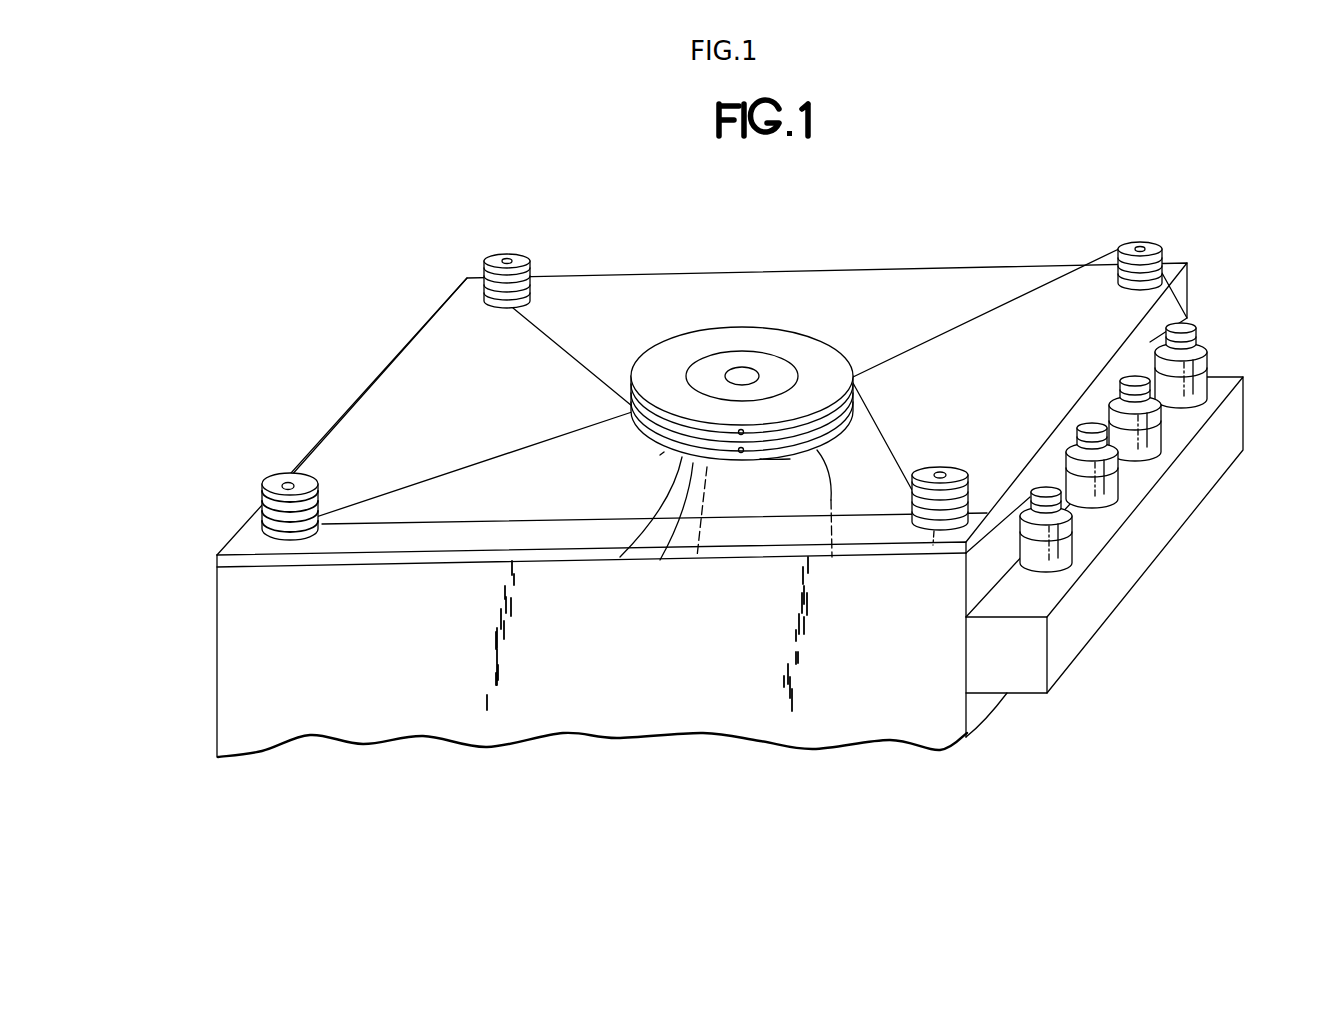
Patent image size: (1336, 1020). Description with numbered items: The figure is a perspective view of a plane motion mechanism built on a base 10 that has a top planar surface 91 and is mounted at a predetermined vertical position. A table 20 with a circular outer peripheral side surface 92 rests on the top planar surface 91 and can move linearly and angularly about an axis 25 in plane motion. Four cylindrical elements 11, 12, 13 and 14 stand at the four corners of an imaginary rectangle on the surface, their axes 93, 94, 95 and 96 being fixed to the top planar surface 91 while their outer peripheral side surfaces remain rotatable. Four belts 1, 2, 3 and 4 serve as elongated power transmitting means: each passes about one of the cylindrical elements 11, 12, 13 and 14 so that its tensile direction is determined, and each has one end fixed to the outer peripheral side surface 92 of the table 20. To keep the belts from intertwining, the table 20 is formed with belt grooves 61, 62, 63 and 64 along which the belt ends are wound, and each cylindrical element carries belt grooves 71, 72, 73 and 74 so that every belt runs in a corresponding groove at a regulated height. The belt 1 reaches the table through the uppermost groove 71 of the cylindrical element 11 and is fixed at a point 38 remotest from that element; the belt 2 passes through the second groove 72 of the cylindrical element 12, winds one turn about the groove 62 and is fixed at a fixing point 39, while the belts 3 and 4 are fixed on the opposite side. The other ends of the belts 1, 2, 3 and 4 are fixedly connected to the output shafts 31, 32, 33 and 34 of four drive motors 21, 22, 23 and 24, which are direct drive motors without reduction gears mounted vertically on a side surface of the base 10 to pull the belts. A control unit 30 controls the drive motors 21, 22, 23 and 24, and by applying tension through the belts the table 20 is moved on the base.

The belt 1 is at (990, 314).
The belt 2 is at (556, 344).
The belt 3 is at (476, 464).
The belt 4 is at (890, 452).
The base 10 is at (262, 609).
The cylindrical element 11 is at (1150, 238).
The cylindrical element 12 is at (514, 265).
The cylindrical element 13 is at (270, 501).
The cylindrical element 14 is at (950, 517).
The table 20 is at (755, 405).
The drive motor 21 is at (1175, 411).
The drive motor 22 is at (1221, 361).
The drive motor 23 is at (1102, 505).
The drive motor 24 is at (1136, 458).
The axis 25 is at (750, 368).
The control unit 30 is at (1068, 643).
The output shaft 31 is at (1128, 376).
The output shaft 32 is at (1190, 331).
The output shaft 33 is at (1046, 481).
The output shaft 34 is at (1082, 426).
The fixing point 38 is at (773, 468).
The fixing point 39 is at (743, 470).
The belt groove 61 is at (620, 557).
The belt groove 62 is at (660, 560).
The belt groove 63 is at (697, 557).
The belt groove 64 is at (832, 557).
The belt groove 71 is at (261, 490).
The belt groove 72 is at (261, 507).
The belt groove 73 is at (261, 520).
The belt groove 74 is at (261, 528).
The top planar surface 91 is at (375, 400).
The outer peripheral side surface 92 is at (660, 455).
The axis 93 is at (1138, 243).
The axis 94 is at (499, 257).
The axis 95 is at (297, 485).
The axis 96 is at (933, 545).